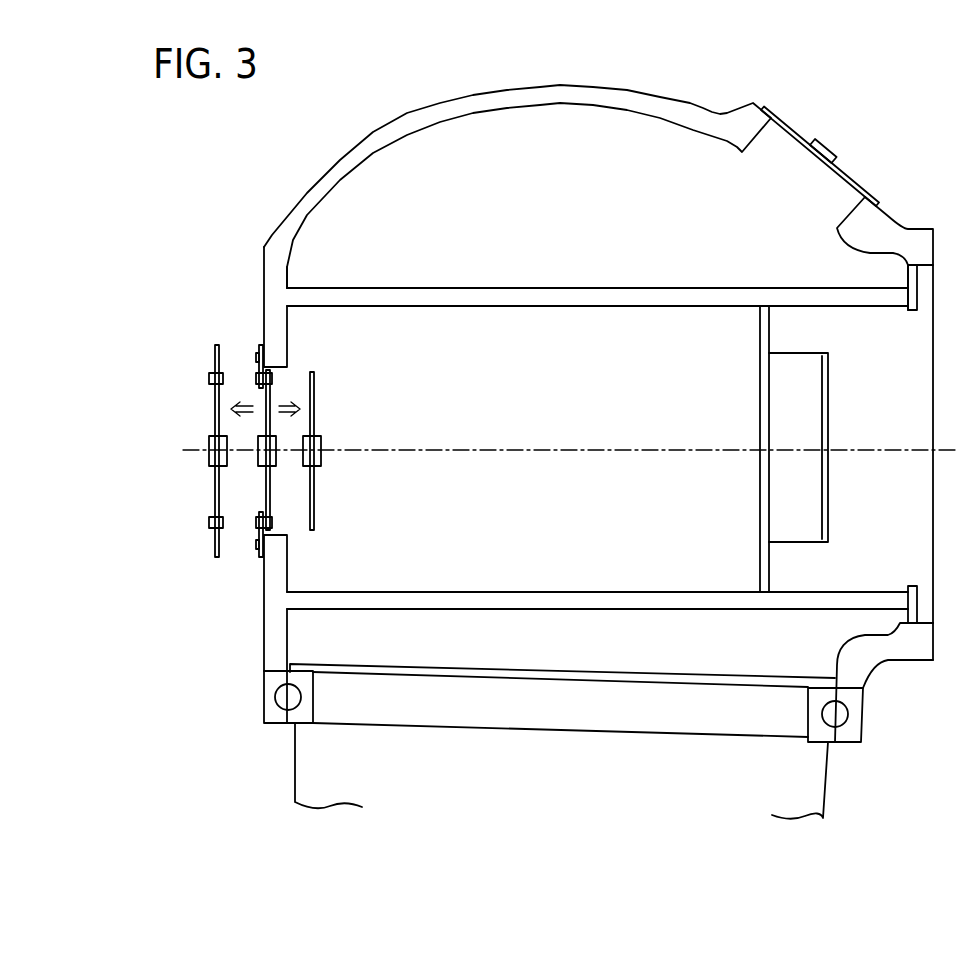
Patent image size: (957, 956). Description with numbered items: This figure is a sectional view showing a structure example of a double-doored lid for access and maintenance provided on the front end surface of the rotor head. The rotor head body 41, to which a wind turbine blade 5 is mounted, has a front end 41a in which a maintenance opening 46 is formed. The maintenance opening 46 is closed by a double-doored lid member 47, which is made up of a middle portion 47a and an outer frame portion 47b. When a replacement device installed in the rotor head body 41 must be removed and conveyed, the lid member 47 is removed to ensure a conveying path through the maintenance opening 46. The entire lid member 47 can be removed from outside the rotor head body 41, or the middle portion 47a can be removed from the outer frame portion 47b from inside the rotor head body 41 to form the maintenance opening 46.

The rotor head body 41 is at (553, 85).
The front end of the rotor head body 41a is at (263, 615).
The maintenance opening 46 is at (290, 517).
The lid member 47 is at (215, 510).
The middle portion of the lid member 47a is at (267, 388).
The outer frame portion of the lid member 47b is at (258, 537).
The wind turbine blade 5 is at (295, 762).